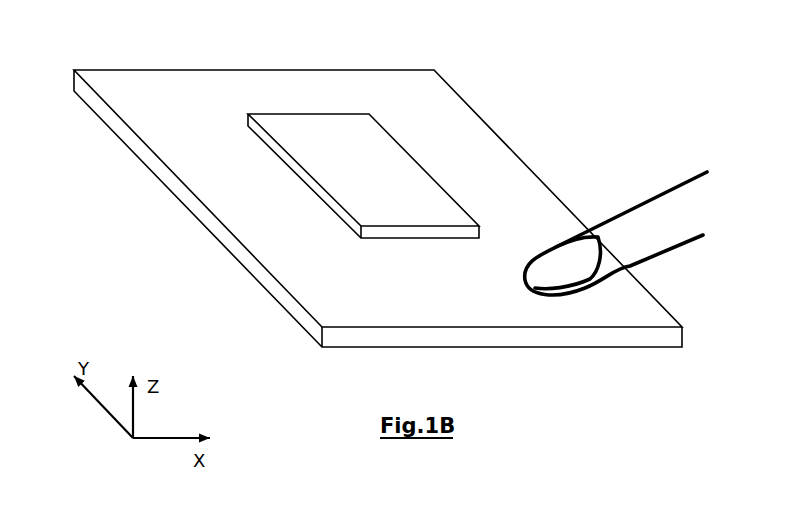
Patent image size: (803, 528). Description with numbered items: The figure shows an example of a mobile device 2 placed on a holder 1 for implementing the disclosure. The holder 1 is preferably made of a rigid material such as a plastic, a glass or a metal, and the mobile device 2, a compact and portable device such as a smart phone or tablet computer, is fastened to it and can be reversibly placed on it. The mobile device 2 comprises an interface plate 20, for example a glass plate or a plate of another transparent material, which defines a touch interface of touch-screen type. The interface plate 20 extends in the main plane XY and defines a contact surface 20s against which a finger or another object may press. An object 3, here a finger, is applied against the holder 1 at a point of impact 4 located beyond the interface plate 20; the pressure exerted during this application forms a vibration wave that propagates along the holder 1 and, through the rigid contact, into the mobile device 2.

The holder 1 is at (436, 99).
The mobile device 2 is at (268, 143).
The interface plate 20 is at (392, 196).
The contact surface 20s is at (338, 129).
The object 3 is at (616, 214).
The point of impact 4 is at (565, 303).